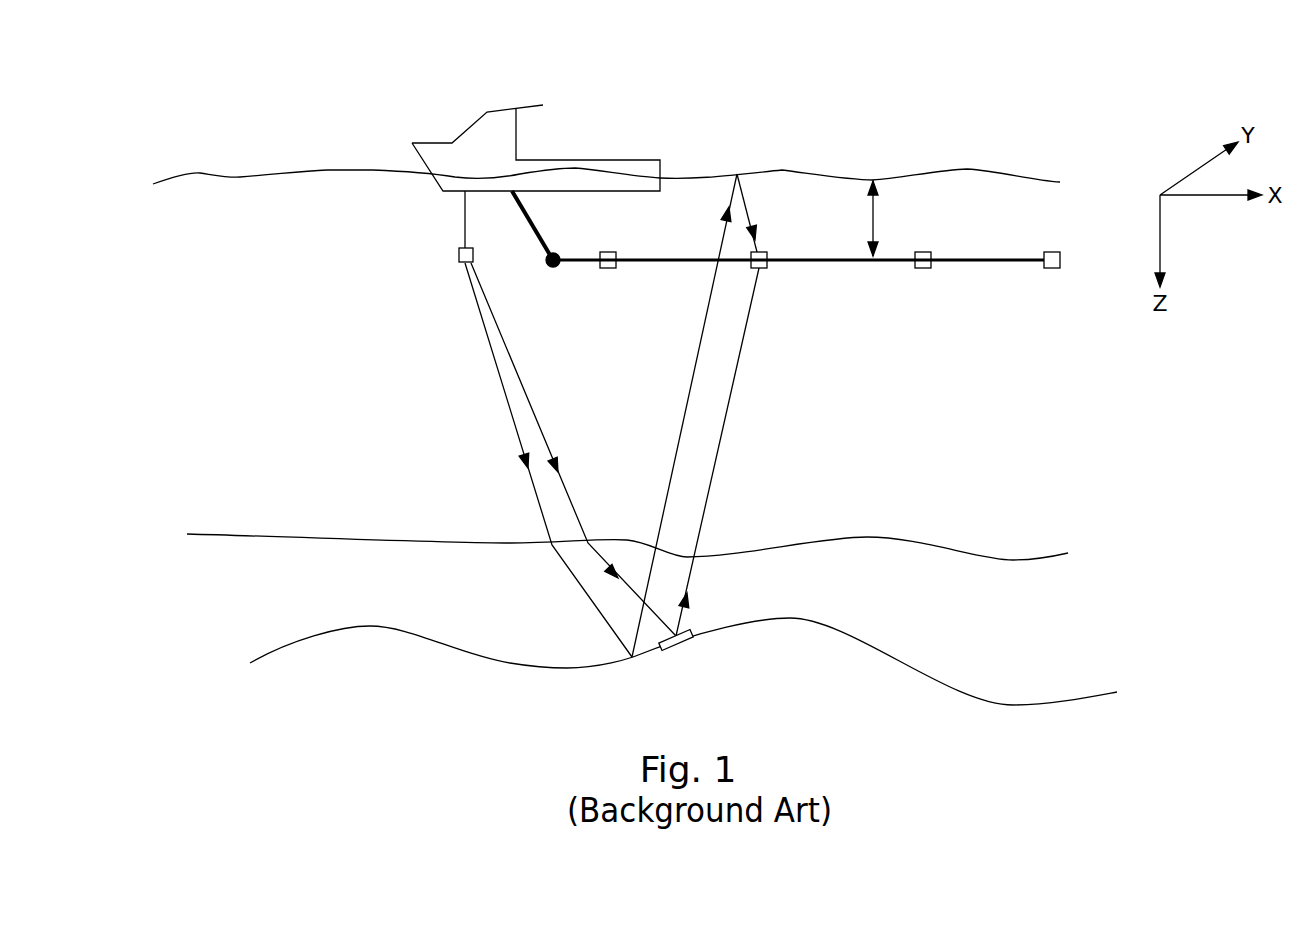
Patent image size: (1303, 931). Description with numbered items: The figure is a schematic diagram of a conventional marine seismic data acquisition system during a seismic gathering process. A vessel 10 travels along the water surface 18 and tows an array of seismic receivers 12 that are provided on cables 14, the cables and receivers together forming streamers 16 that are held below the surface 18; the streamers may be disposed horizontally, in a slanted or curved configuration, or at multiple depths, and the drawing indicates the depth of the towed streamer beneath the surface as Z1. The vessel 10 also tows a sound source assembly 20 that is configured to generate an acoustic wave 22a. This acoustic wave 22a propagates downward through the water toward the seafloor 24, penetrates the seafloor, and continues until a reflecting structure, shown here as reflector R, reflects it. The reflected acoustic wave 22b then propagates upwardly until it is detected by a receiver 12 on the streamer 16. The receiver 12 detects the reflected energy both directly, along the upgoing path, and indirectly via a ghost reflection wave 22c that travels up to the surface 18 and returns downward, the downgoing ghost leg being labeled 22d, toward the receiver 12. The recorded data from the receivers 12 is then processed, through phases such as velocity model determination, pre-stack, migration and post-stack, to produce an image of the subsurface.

The vessel 10 is at (468, 138).
The seismic receivers 12 is at (608, 268).
The cables 14 is at (585, 263).
The streamers 16 is at (786, 284).
The surface 18 is at (782, 170).
The sound source assembly 20 is at (458, 255).
The acoustic wave 22a is at (527, 400).
The reflected acoustic wave 22b is at (717, 488).
The ghost reflection wave 22c is at (707, 320).
The ghost wave reflected from surface 22d is at (750, 208).
The seafloor 24 is at (917, 540).
The streamer depth Z1 is at (875, 217).
The reflector R is at (670, 647).